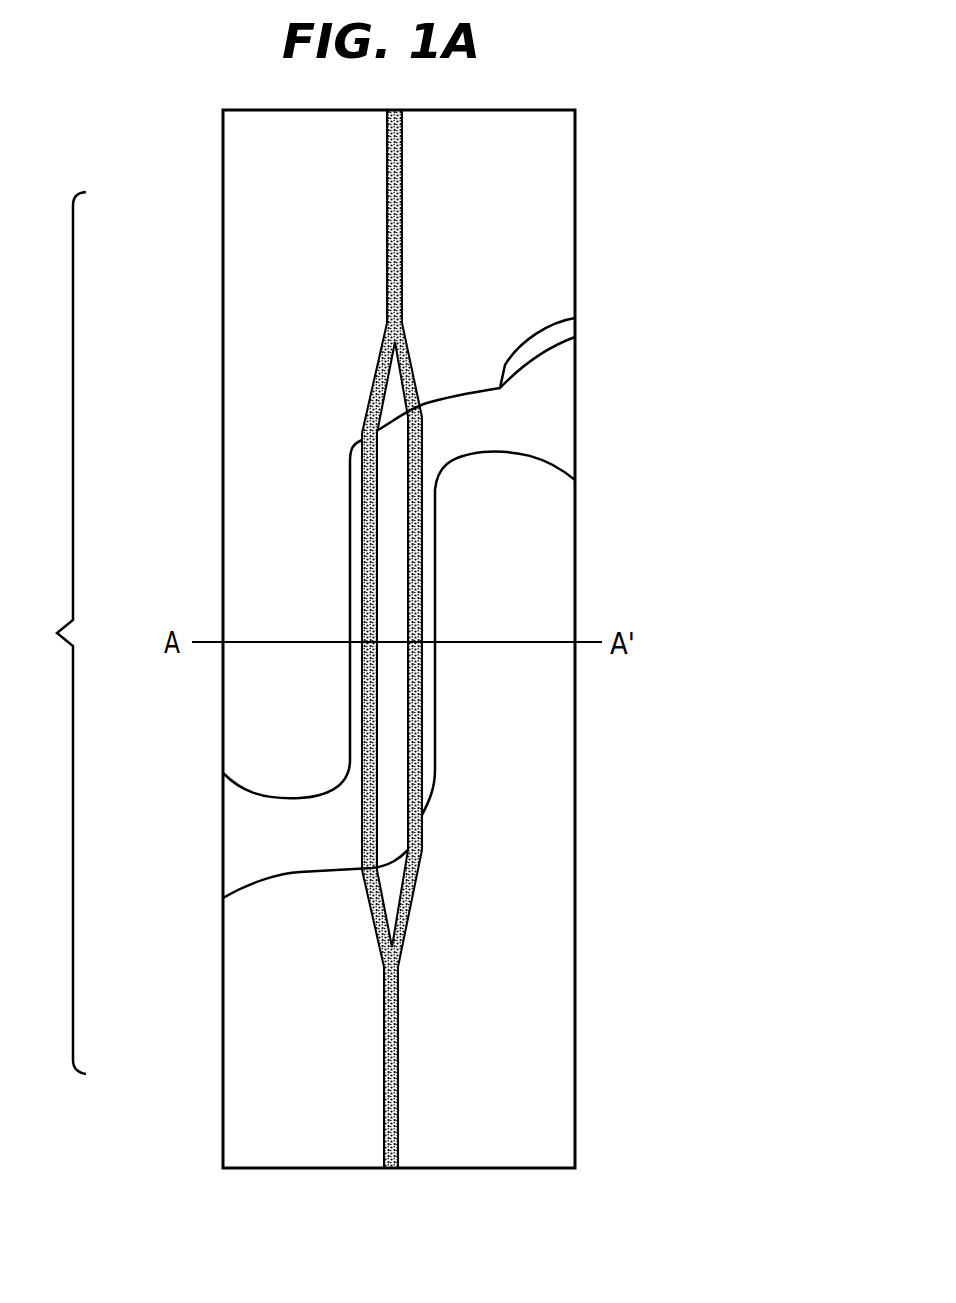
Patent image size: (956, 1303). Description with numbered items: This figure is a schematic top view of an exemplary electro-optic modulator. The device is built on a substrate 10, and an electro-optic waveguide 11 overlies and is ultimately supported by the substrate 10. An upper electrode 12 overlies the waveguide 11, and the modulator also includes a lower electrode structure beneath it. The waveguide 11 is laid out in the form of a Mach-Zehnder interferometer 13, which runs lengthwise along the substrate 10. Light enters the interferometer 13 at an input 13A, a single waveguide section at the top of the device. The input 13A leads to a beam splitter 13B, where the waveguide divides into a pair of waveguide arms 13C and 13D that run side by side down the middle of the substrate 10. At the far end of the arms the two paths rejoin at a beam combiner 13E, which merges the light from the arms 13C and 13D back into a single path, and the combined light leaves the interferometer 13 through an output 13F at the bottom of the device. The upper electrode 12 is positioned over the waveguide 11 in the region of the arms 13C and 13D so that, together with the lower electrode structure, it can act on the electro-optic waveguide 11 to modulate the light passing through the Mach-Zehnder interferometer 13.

The substrate 10 is at (578, 176).
The electro-optic waveguide 11 is at (398, 1045).
The upper electrode 12 is at (575, 318).
The Mach-Zehnder interferometer 13 is at (56, 633).
The input 13A is at (388, 246).
The beam splitter 13B is at (386, 322).
The waveguide arm 13C is at (370, 392).
The waveguide arm 13D is at (423, 760).
The beam combiner 13E is at (383, 948).
The output 13F is at (386, 1000).